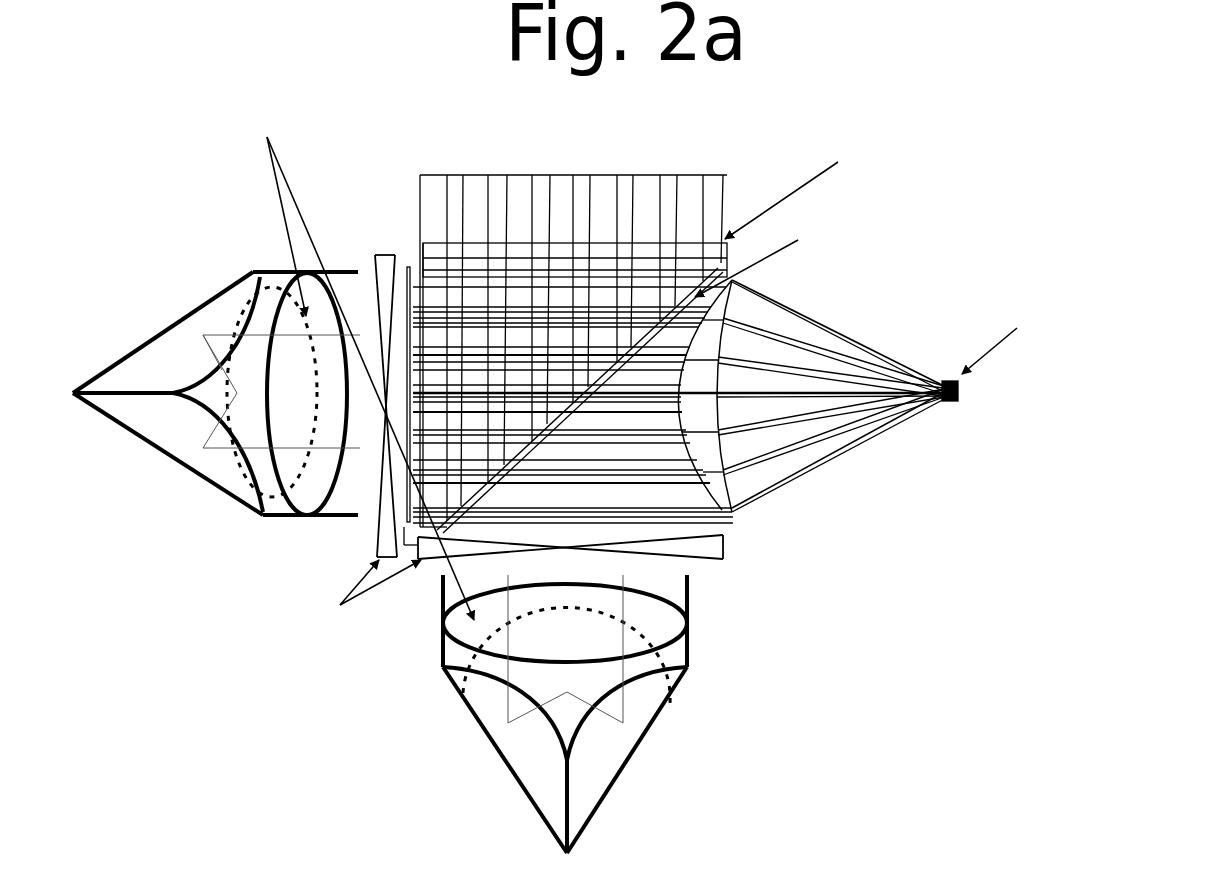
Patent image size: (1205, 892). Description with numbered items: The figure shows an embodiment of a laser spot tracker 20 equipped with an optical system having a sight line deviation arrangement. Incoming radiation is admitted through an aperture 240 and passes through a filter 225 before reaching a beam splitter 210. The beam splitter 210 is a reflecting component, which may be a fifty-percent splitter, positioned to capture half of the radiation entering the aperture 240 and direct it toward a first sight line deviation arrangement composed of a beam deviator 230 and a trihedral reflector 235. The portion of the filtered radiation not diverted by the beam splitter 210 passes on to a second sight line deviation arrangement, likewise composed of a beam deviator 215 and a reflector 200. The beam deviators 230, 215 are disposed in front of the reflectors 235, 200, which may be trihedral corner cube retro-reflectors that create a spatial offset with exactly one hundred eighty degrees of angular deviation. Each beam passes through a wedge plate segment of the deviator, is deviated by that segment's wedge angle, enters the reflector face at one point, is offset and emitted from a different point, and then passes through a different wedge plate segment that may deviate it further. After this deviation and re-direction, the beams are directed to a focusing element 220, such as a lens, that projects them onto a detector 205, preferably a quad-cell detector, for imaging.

The tracker 20 is at (630, 142).
The reflector 200 is at (593, 495).
The detector 205 is at (1065, 415).
The beam splitter 210 is at (785, 366).
The beam deviator 215 is at (695, 585).
The focusing element 220 is at (892, 438).
The filter 225 is at (736, 190).
The beam deviator 230 is at (274, 458).
The trihedral reflector 235 is at (238, 302).
The aperture 240 is at (767, 295).